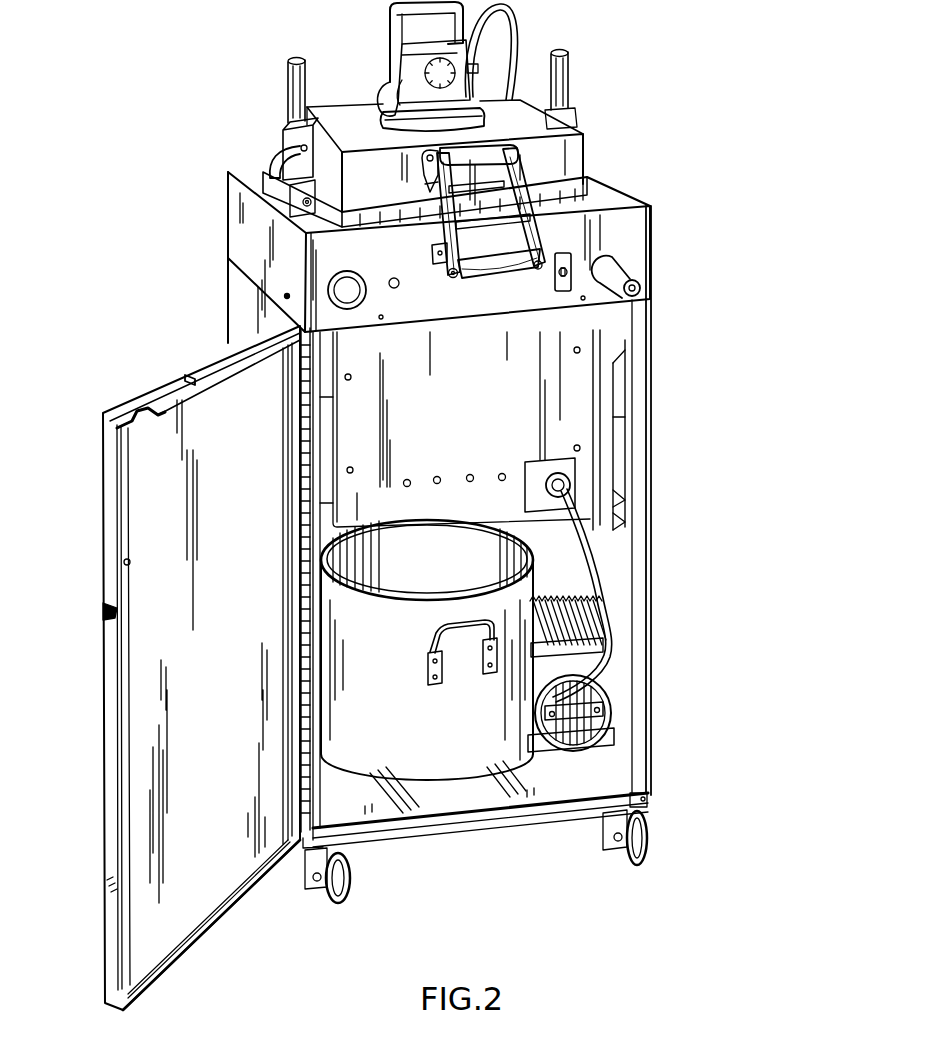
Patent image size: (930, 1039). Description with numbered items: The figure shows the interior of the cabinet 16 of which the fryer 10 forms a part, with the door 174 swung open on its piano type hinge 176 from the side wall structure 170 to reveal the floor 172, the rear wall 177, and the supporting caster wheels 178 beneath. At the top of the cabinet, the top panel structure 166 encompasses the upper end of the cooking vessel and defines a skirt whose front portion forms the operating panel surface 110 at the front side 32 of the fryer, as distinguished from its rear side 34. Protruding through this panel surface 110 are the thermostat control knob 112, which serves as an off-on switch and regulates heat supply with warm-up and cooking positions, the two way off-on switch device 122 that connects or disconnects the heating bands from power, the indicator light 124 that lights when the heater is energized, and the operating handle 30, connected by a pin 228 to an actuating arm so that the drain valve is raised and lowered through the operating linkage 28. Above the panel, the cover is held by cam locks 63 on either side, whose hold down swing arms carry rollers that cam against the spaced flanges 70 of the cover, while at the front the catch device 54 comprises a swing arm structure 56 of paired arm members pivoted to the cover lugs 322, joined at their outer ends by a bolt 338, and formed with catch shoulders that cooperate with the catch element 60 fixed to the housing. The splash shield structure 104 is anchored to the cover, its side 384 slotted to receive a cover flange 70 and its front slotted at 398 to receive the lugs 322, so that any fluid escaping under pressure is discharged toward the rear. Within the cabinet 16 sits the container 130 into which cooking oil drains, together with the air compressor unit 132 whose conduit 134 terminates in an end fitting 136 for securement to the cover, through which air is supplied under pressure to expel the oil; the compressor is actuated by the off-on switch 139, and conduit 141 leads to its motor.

The fryer 10 is at (645, 90).
The cabinet 16 is at (652, 352).
The operating linkage 28 is at (600, 412).
The handle 30 is at (630, 267).
The front side 32 is at (632, 227).
The rear side 34 is at (223, 188).
The catch device 54 is at (560, 157).
The swing arm structure 56 is at (433, 230).
The catch element 60 is at (440, 262).
The cam locks 63 is at (278, 115).
The cover flanges 70 is at (263, 157).
The splash shield structure 104 is at (335, 103).
The operating panel surface 110 is at (287, 296).
The thermostat control knob 112 is at (328, 299).
The off-on switch device 122 is at (553, 287).
The indicator light 124 is at (399, 300).
The container 130 is at (432, 747).
The air compressor unit 132 is at (568, 757).
The conduit 134 is at (618, 645).
The end fitting 136 is at (480, 78).
The off-on switch 139 is at (540, 490).
The conduit 141 is at (603, 577).
The top panel structure 166 is at (585, 197).
The side wall structure 170 is at (652, 545).
The floor 172 is at (603, 778).
The door 174 is at (145, 487).
The piano type hinge 176 is at (298, 463).
The rear wall 177 is at (523, 525).
The supporting wheels 178 is at (243, 258).
The pin 228 is at (635, 288).
The cover lugs 322 is at (425, 168).
The bolt 338 is at (492, 272).
The side 384 is at (327, 152).
The slot 398 is at (426, 187).